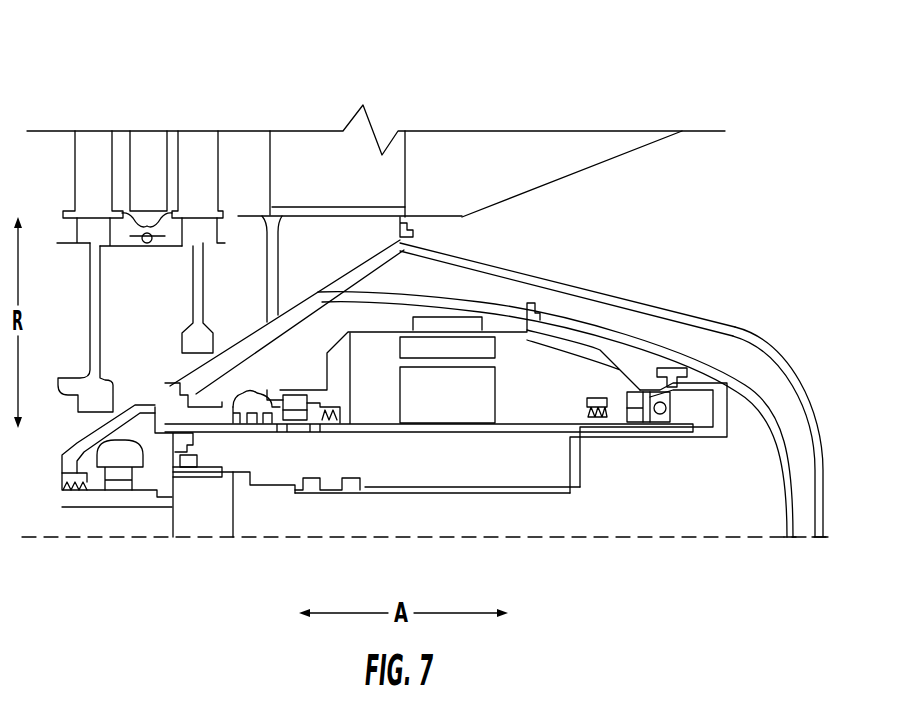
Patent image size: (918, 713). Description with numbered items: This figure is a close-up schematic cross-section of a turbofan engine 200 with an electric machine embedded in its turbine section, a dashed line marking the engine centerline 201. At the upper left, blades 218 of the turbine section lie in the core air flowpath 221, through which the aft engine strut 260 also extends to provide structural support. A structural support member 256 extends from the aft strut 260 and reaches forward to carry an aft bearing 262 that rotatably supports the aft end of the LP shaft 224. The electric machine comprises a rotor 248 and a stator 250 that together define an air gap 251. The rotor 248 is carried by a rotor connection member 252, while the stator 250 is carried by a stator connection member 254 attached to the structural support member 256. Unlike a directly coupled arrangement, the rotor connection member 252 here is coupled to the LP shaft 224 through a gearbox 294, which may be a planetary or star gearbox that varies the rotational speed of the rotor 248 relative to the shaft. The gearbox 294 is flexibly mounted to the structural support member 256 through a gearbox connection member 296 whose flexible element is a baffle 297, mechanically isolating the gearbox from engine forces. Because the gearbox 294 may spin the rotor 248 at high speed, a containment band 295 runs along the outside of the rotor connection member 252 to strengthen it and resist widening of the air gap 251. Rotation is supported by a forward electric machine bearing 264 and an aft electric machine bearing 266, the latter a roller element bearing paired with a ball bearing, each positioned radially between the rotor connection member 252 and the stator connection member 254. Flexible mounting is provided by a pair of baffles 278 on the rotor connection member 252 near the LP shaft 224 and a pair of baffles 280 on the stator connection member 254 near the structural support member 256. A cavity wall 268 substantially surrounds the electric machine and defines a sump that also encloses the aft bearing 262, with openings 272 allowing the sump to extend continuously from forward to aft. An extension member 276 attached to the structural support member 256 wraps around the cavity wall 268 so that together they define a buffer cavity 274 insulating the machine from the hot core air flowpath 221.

The turbofan engine 200 is at (577, 82).
The engine centerline axis 201 is at (692, 537).
The fan blades 218 is at (146, 152).
The core air flowpath 221 is at (241, 152).
The LP shaft 224 is at (82, 500).
The rotor 248 is at (562, 302).
The stator 250 is at (455, 407).
The air gap 251 is at (506, 360).
The rotor connection member 252 is at (457, 333).
The stator connection member 254 is at (400, 428).
The structural support member 256 is at (337, 280).
The aft strut 260 is at (397, 182).
The aft bearing 262 is at (118, 486).
The forward electric machine bearing 264 is at (294, 397).
The aft electric machine bearing 266 is at (692, 407).
The cavity wall 268 is at (266, 330).
The openings 272 is at (283, 452).
The buffer cavity 274 is at (450, 274).
The extension member 276 is at (620, 300).
The baffles 278 is at (350, 474).
The baffles 280 is at (255, 401).
The gearbox 294 is at (238, 522).
The containment band 295 is at (452, 325).
The gearbox connection member 296 is at (192, 458).
The baffle 297 is at (205, 440).